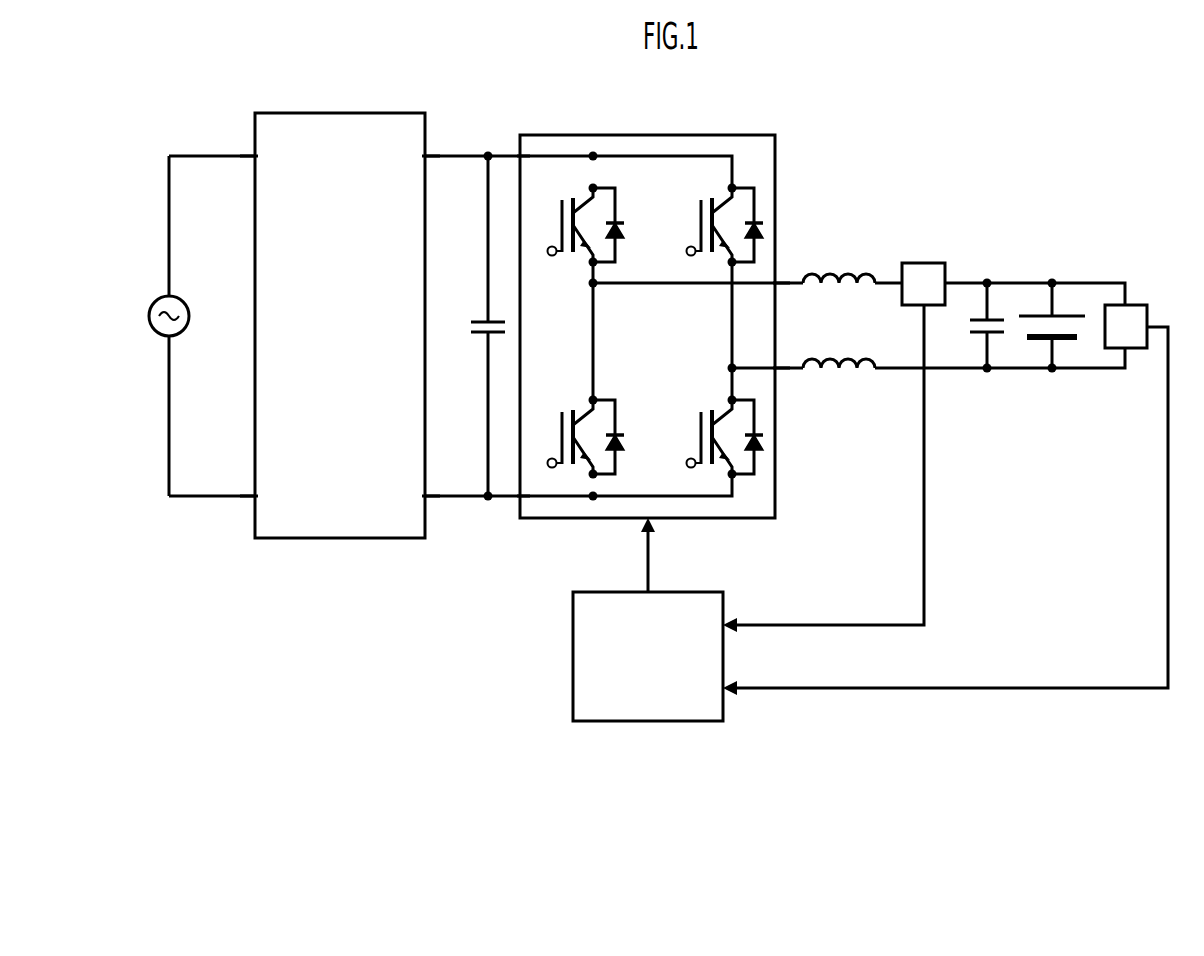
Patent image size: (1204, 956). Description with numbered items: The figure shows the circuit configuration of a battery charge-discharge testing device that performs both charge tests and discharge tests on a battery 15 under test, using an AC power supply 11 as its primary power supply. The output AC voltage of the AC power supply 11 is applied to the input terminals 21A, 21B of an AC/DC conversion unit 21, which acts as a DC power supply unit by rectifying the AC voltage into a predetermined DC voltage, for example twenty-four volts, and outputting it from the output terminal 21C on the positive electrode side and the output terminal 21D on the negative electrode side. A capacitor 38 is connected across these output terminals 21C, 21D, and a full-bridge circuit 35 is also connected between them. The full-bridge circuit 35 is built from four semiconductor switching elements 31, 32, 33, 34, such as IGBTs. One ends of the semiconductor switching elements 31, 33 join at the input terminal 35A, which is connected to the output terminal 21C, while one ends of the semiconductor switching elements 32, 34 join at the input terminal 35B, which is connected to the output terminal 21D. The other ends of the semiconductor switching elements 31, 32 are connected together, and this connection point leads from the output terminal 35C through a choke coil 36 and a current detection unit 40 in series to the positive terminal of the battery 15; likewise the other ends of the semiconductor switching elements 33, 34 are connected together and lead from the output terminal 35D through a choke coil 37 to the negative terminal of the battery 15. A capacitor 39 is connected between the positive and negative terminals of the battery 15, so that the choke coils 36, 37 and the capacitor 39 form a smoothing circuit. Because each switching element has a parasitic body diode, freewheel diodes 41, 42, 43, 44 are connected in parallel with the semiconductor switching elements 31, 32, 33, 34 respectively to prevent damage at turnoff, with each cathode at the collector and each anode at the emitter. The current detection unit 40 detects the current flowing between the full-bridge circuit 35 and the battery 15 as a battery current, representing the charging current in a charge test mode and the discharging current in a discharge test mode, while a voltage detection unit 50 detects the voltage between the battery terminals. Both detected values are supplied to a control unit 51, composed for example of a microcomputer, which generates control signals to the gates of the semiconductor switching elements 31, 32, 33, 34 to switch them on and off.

The AC power supply 11 is at (189, 316).
The AC/DC conversion unit 21 is at (355, 113).
The input terminal 21A is at (249, 153).
The input terminal 21B is at (252, 498).
The output terminal 21C is at (429, 157).
The output terminal 21D is at (428, 498).
The semiconductor switching element 31 is at (564, 212).
The semiconductor switching element 32 is at (564, 424).
The semiconductor switching element 33 is at (701, 224).
The semiconductor switching element 34 is at (701, 438).
The full-bridge circuit 35 is at (775, 167).
The input terminal 35A is at (504, 157).
The input terminal 35B is at (521, 499).
The output terminal 35C is at (777, 282).
The output terminal 35D is at (777, 370).
The choke coil 36 is at (840, 268).
The choke coil 37 is at (836, 370).
The capacitor 38 is at (480, 328).
The capacitor 39 is at (974, 321).
The current detection unit 40 is at (926, 263).
The freewheel diode 41 is at (624, 232).
The freewheel diode 42 is at (624, 444).
The freewheel diode 43 is at (763, 228).
The freewheel diode 44 is at (763, 440).
The battery 15 is at (1060, 316).
The voltage detection unit 50 is at (1138, 305).
The control unit 51 is at (679, 592).